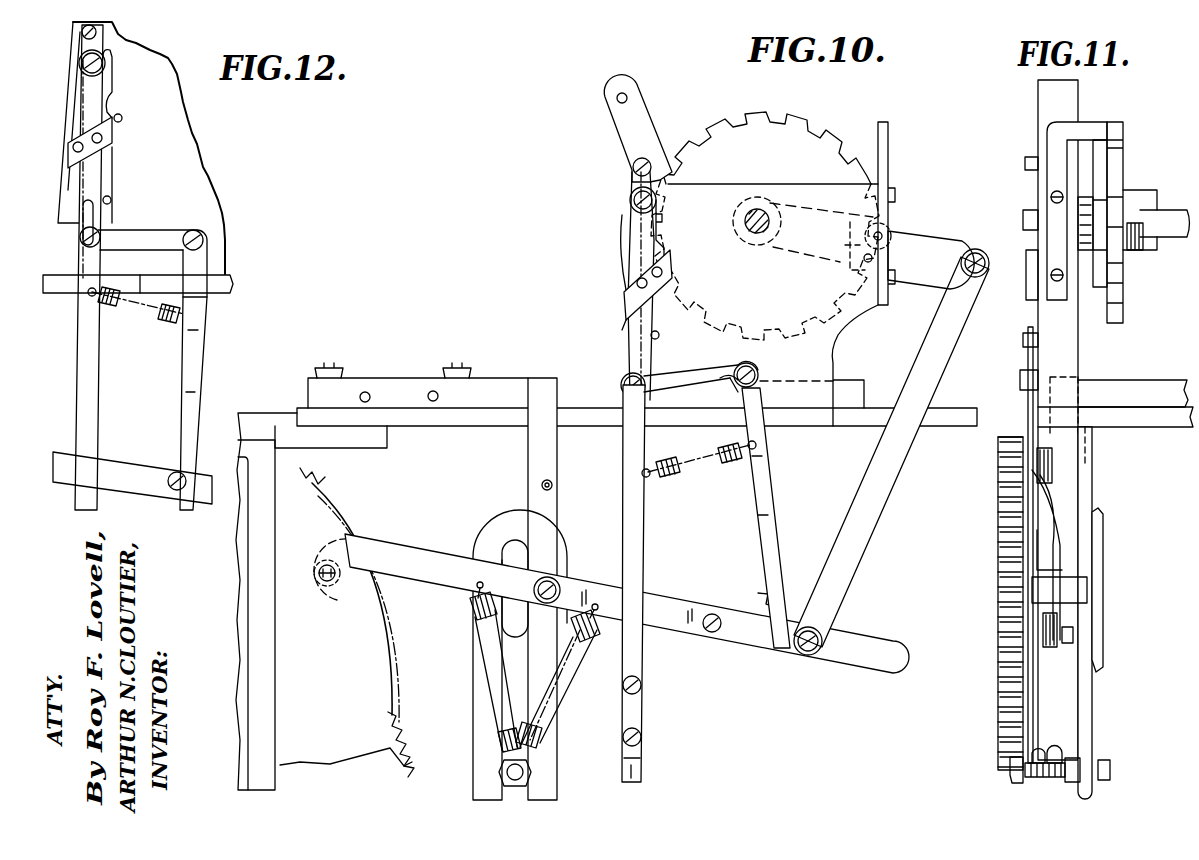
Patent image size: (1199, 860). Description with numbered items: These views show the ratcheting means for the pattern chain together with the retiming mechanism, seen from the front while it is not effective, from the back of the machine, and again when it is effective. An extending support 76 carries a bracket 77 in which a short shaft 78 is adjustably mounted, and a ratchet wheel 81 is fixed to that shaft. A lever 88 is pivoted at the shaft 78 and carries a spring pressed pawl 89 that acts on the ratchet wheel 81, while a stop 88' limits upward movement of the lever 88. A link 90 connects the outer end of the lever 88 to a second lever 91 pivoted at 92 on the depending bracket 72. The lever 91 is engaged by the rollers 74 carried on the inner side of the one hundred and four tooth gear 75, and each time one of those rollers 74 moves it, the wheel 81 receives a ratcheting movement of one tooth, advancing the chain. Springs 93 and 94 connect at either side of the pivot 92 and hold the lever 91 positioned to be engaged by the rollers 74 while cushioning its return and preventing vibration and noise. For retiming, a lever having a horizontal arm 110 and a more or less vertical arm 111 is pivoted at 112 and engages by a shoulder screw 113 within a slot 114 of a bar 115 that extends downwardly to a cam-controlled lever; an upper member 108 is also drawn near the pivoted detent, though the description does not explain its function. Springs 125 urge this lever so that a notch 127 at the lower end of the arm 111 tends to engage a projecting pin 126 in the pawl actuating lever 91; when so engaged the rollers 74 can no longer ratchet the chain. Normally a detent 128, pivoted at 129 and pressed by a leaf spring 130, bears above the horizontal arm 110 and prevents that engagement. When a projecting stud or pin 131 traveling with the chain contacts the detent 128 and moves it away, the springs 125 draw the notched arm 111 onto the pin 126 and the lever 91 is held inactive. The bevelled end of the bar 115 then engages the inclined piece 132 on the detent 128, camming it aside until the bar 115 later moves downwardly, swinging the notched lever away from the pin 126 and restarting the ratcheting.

In FIG. 10, the depending bracket 72 is at (560, 521).
In FIG. 10, the roller 74 is at (334, 588).
In FIG. 10, the 104 tooth gear 75 is at (400, 750).
In FIG. 11, the 104 tooth gear 75 is at (1002, 660).
In FIG. 12, the extending support 76 is at (226, 285).
In FIG. 10, the extending support 76 is at (935, 407).
In FIG. 11, the extending support 76 is at (1146, 426).
In FIG. 10, the bracket 77 is at (835, 348).
In FIG. 11, the bracket 77 is at (1131, 386).
In FIG. 10, the short shaft 78 is at (750, 235).
In FIG. 11, the short shaft 78 is at (1168, 214).
In FIG. 10, the ratchet wheel 81 is at (788, 140).
In FIG. 11, the ratchet wheel 81 is at (1124, 158).
In FIG. 10, the lever 88 is at (938, 250).
In FIG. 10, the stop 88' is at (903, 213).
In FIG. 11, the stop 88' is at (1089, 197).
In FIG. 10, the spring pressed pawl 89 is at (830, 255).
In FIG. 10, the link 90 is at (891, 456).
In FIG. 11, the link 90 is at (1092, 464).
In FIG. 12, the lever 91 is at (132, 478).
In FIG. 10, the lever 91 is at (656, 603).
In FIG. 11, the lever 91 is at (1103, 639).
In FIG. 10, the pivot 92 is at (566, 590).
In FIG. 10, the spring 93 is at (474, 615).
In FIG. 10, the spring 94 is at (580, 645).
In FIG. 10, the arm 108 is at (642, 116).
In FIG. 11, the arm 108 is at (1046, 112).
In FIG. 12, the horizontal arm 110 is at (136, 236).
In FIG. 10, the horizontal arm 110 is at (680, 372).
In FIG. 11, the horizontal arm 110 is at (1044, 384).
In FIG. 12, the vertical arm 111 is at (198, 345).
In FIG. 10, the vertical arm 111 is at (770, 496).
In FIG. 11, the vertical arm 111 is at (1043, 503).
In FIG. 12, the pivot 112 is at (206, 241).
In FIG. 10, the pivot 112 is at (759, 378).
In FIG. 11, the pivot 112 is at (1023, 380).
In FIG. 10, the shoulder screw 113 is at (621, 384).
In FIG. 12, the slot 114 is at (88, 222).
In FIG. 10, the slot 114 is at (624, 436).
In FIG. 12, the bar 115 is at (78, 379).
In FIG. 10, the bar 115 is at (644, 538).
In FIG. 11, the bar 115 is at (1030, 424).
In FIG. 12, the spring 125 is at (122, 312).
In FIG. 10, the spring 125 is at (712, 450).
In FIG. 12, the projecting pin 126 is at (174, 492).
In FIG. 10, the projecting pin 126 is at (714, 633).
In FIG. 10, the notch 127 is at (747, 599).
In FIG. 12, the detent 128 is at (103, 90).
In FIG. 10, the detent 128 is at (628, 268).
In FIG. 12, the pivot 129 is at (107, 63).
In FIG. 10, the pivot 129 is at (632, 214).
In FIG. 12, the leaf spring 130 is at (73, 90).
In FIG. 10, the leaf spring 130 is at (622, 238).
In FIG. 12, the projecting stud or pin 131 is at (123, 119).
In FIG. 10, the projecting stud or pin 131 is at (660, 336).
In FIG. 12, the inclined piece 132 is at (108, 145).
In FIG. 10, the inclined piece 132 is at (650, 293).